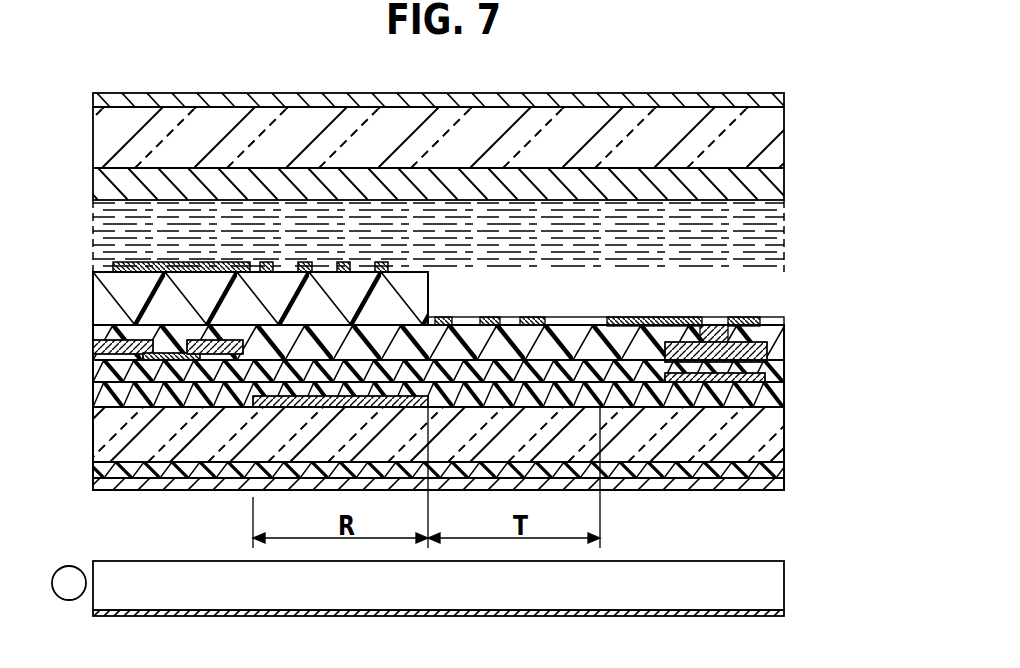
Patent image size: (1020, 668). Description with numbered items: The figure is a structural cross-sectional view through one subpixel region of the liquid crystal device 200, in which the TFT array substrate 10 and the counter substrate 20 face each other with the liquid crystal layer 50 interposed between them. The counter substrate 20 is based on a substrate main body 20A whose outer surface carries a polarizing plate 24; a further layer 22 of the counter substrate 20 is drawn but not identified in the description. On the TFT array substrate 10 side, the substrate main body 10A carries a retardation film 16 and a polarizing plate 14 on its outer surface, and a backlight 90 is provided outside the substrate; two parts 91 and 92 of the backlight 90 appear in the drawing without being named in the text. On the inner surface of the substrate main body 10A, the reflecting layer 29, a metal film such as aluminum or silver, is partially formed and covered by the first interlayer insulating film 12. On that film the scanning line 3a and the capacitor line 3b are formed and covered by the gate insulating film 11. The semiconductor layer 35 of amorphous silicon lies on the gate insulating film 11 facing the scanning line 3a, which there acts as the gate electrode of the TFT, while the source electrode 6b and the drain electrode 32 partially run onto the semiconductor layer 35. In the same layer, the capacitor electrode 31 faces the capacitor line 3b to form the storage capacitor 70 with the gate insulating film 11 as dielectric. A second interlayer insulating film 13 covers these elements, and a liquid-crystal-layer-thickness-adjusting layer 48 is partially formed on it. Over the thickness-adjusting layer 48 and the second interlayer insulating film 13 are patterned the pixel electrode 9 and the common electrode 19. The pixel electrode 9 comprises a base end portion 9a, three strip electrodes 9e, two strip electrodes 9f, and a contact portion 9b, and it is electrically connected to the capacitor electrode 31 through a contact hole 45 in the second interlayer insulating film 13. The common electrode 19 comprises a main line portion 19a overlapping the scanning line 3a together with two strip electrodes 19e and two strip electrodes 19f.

The liquid crystal device 200 is at (688, 84).
The counter substrate 20 is at (453, 141).
The polarizing plate 24 is at (784, 100).
The substrate main body 20A is at (786, 141).
The counter electrode 22 is at (786, 181).
The liquid crystal layer 50 is at (786, 252).
The common electrode 19 is at (418, 238).
The liquid-crystal-layer-thickness-adjusting layer 48 is at (173, 262).
The main line portion 19a is at (227, 262).
The strip electrodes 9e is at (266, 262).
The strip electrodes 19e is at (305, 262).
The strip electrodes 19f is at (497, 317).
The strip electrodes 9f is at (441, 317).
The base end portion 9a is at (612, 317).
The contact portion 9b is at (715, 317).
The contact hole 45 is at (723, 317).
The pixel electrode 9 is at (462, 286).
The second interlayer insulating film 13 is at (467, 430).
The storage capacitor 70 is at (663, 351).
The gate insulating film 11 is at (467, 442).
The first interlayer insulating film 12 is at (467, 454).
The substrate main body 10A is at (776, 433).
The retardation film 16 is at (784, 470).
The polarizing plate 14 is at (784, 490).
The TFT array substrate 10 is at (453, 389).
The source electrode 6b is at (101, 345).
The semiconductor layer 35 is at (135, 360).
The scanning line 3a is at (160, 360).
The drain electrode 32 is at (240, 360).
The reflecting layer 29 is at (300, 407).
The capacitor electrode 31 is at (740, 364).
The capacitor line 3b is at (736, 386).
The backlight 90 is at (472, 594).
The light guide plate 91 is at (776, 581).
The reflector 92 is at (779, 612).